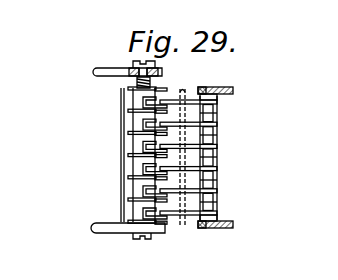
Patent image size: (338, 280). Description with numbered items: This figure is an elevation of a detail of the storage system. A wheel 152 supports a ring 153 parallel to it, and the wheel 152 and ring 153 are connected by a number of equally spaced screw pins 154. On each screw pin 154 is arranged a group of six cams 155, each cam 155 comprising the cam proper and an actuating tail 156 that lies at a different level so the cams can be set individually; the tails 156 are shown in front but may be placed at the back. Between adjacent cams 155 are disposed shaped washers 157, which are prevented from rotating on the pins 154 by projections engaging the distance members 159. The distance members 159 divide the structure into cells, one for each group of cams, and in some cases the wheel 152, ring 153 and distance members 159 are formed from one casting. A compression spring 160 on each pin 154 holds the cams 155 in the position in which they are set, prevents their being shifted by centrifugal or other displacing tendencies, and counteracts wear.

The wheel 152 is at (108, 229).
The ring 153 is at (158, 73).
The screw pin 154 is at (133, 65).
The cam 155 is at (205, 103).
The actuating tail 156 is at (143, 101).
The shaped washer 157 is at (123, 87).
The distance member 159 is at (127, 210).
The compression spring 160 is at (157, 81).